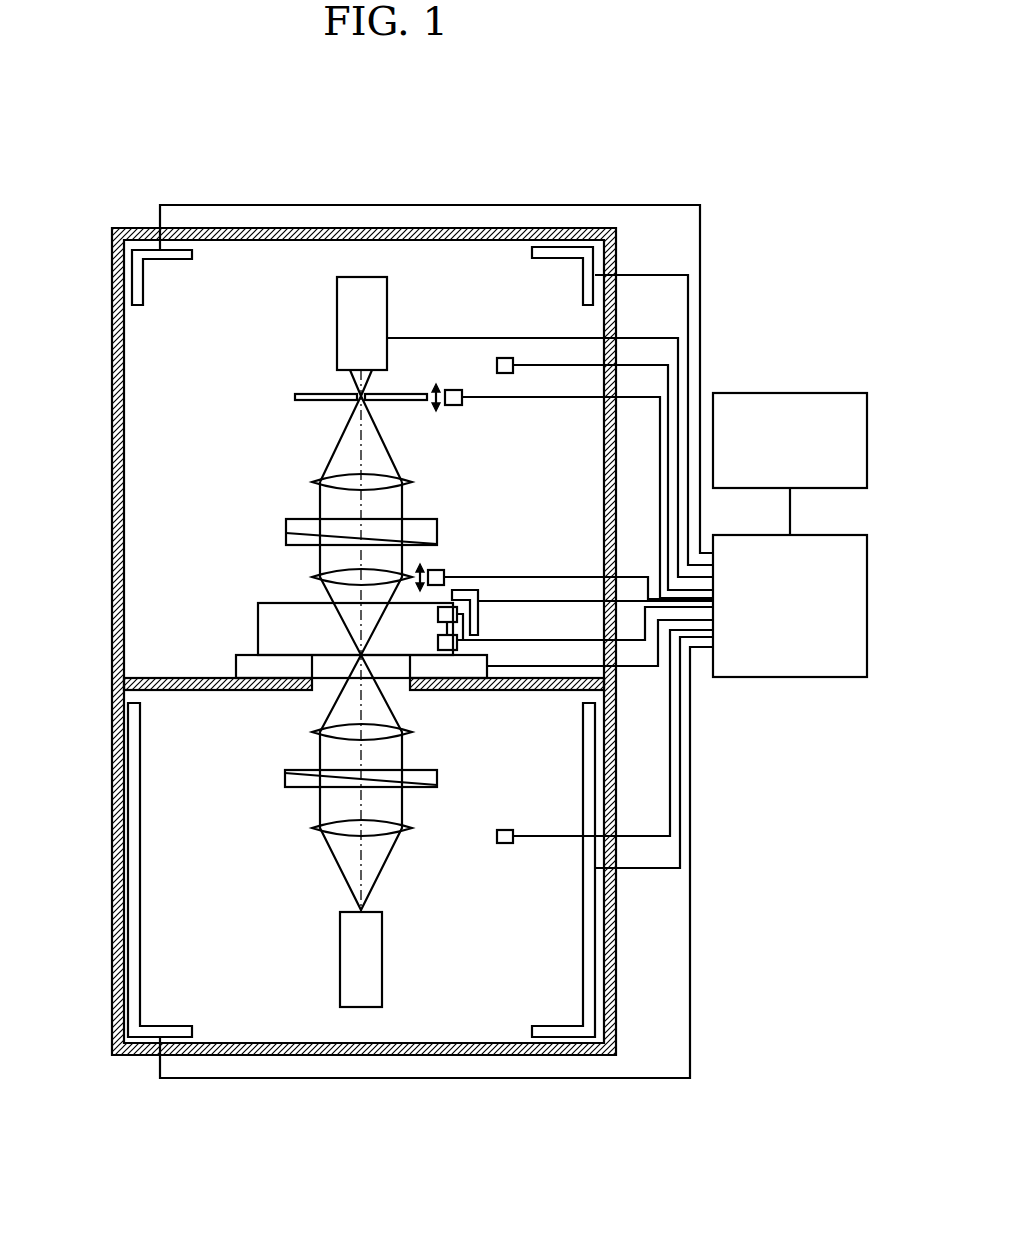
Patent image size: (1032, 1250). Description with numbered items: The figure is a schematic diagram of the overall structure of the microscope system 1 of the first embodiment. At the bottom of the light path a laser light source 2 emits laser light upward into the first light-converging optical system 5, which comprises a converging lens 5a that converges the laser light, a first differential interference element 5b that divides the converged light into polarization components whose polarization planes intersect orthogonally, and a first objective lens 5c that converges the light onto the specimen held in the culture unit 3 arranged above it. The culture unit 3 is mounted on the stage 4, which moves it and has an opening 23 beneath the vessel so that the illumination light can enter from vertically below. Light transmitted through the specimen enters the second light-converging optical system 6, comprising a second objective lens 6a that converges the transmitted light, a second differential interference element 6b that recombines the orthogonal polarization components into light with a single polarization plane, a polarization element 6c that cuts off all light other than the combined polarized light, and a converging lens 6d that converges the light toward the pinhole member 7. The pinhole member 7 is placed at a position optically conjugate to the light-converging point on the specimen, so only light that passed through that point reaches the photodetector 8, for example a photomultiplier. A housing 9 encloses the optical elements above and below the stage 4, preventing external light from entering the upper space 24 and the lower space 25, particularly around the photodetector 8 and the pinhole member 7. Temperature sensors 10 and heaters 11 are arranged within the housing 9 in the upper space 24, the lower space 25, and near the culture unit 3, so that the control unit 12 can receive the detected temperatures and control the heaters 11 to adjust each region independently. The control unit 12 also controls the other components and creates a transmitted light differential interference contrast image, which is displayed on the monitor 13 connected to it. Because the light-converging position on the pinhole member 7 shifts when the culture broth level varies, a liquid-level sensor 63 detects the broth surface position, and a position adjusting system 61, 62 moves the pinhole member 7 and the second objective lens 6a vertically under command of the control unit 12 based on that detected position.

The microscope system 1 is at (708, 158).
The laser light source 2 is at (340, 945).
The culture unit 3 is at (258, 614).
The stage 4 is at (236, 664).
The first light-converging optical system 5 is at (296, 876).
The converging lens 5a is at (312, 828).
The first differential interference element 5b is at (285, 778).
The first objective lens 5c is at (312, 732).
The second light-converging optical system 6 is at (295, 502).
The second objective lens 6a is at (315, 577).
The second differential interference element 6b is at (437, 541).
The polarization element 6c is at (437, 522).
The converging lens 6d is at (405, 480).
The pinhole member 7 is at (318, 393).
The photodetector 8 is at (387, 290).
The housing 9 is at (112, 441).
The temperature sensors 10 is at (497, 365).
The heaters 11 is at (170, 262).
The control unit 12 is at (790, 677).
The monitor 13 is at (781, 393).
The opening 23 is at (405, 690).
The upper space 24 is at (160, 345).
The lower space 25 is at (172, 742).
The position adjusting system 61 is at (455, 405).
The position adjusting system 62 is at (446, 577).
The liquid-level sensor 63 is at (438, 612).